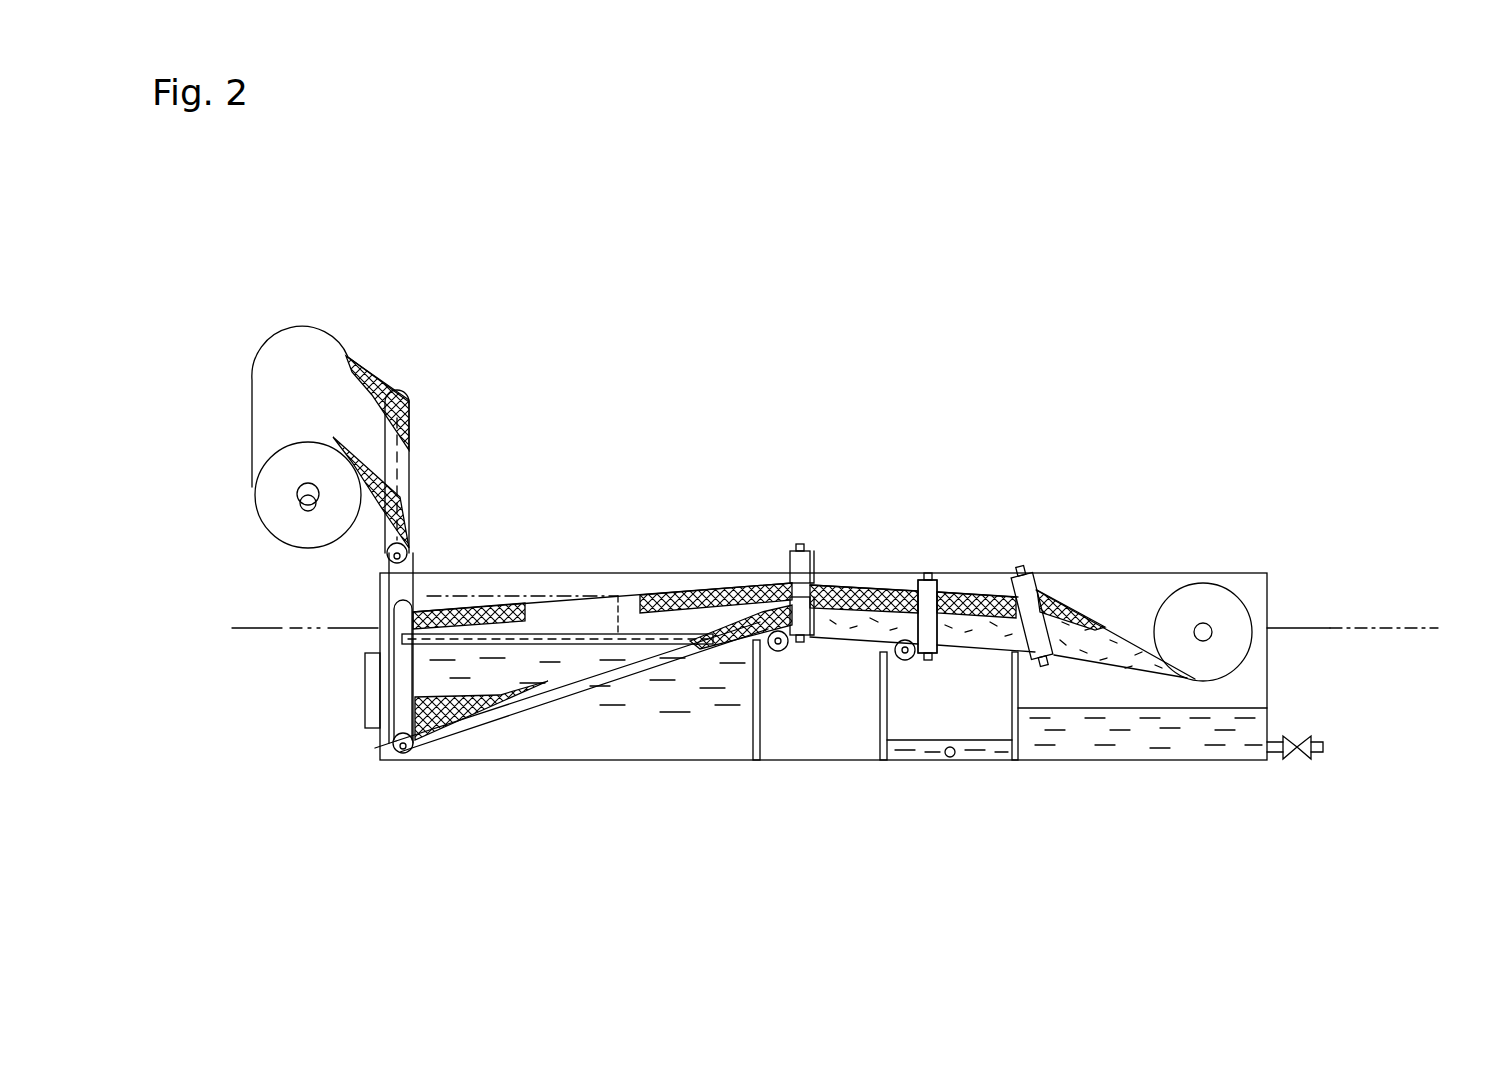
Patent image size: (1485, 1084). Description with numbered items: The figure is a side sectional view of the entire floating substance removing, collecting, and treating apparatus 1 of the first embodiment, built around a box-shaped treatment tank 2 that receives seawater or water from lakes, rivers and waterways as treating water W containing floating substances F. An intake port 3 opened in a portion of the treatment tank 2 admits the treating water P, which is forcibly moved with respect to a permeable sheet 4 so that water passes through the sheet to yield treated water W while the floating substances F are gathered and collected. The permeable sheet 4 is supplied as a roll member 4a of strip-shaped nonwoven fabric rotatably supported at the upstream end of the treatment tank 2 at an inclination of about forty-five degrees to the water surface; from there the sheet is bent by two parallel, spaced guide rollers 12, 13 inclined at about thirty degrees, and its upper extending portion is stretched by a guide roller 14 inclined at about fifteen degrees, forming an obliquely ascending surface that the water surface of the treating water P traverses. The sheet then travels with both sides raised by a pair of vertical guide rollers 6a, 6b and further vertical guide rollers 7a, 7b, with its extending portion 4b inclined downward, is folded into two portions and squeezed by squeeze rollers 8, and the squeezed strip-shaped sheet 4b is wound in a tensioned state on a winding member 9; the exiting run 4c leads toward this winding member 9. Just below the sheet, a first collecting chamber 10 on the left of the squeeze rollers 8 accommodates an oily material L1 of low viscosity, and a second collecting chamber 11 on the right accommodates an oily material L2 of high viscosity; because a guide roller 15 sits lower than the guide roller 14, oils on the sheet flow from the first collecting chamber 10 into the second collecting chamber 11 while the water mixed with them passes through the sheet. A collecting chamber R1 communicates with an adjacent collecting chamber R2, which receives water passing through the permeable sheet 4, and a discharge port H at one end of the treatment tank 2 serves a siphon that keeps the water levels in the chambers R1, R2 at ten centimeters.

The floating substance removing, collecting, and treating apparatus 1 is at (821, 478).
The treatment tank 2 is at (462, 582).
The intake port 3 is at (513, 684).
The permeable sheet 4 is at (685, 600).
The roll member 4a is at (306, 320).
The extending portion of the permeable sheet 4b is at (850, 640).
The web exit run 4c is at (1052, 598).
The vertical guide roller 6a is at (798, 566).
The vertical guide roller 6b is at (806, 605).
The vertical guide roller 7a is at (914, 590).
The vertical guide roller 7b is at (927, 616).
The squeeze rollers 8 is at (1027, 558).
The winding member 9 is at (1232, 565).
The first collecting chamber 10 is at (995, 703).
The second collecting chamber 11 is at (1195, 690).
The guide roller 12 is at (397, 398).
The guide roller 13 is at (395, 752).
The guide roller 14 is at (780, 652).
The guide roller 15 is at (908, 662).
The floating substances F is at (578, 634).
The discharge port H is at (365, 697).
The treating water P is at (483, 660).
The treating water / treated water W is at (680, 697).
The collecting chamber R1 is at (503, 735).
The collecting chamber R2 is at (862, 740).
The oily material having low viscosity L1 is at (978, 585).
The oily material having high viscosity L2 is at (1122, 623).